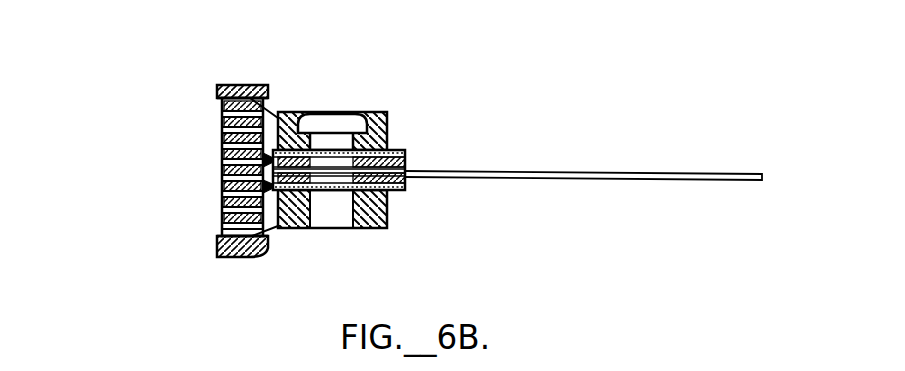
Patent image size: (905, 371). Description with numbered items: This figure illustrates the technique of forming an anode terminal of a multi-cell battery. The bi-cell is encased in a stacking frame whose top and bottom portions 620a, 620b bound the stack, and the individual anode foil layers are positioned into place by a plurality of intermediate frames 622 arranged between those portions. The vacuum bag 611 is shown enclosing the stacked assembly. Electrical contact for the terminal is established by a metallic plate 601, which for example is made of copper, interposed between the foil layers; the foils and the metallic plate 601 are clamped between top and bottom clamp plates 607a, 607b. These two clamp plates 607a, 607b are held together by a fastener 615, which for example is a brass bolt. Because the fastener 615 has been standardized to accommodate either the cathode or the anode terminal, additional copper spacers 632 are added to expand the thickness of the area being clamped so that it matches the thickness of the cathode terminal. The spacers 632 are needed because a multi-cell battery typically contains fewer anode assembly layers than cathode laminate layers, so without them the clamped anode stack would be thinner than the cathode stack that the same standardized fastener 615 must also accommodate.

The metallic plate 601 is at (692, 173).
The top clamp plate 607a is at (388, 117).
The bottom clamp plate 607b is at (373, 228).
The vacuum bag 611 is at (232, 84).
The fastener 615 is at (335, 112).
The top portion of stacking frame 620a is at (217, 98).
The bottom portion of stacking frame 620b is at (218, 237).
The intermediate frames 622 is at (220, 211).
The copper spacers 632 is at (405, 162).